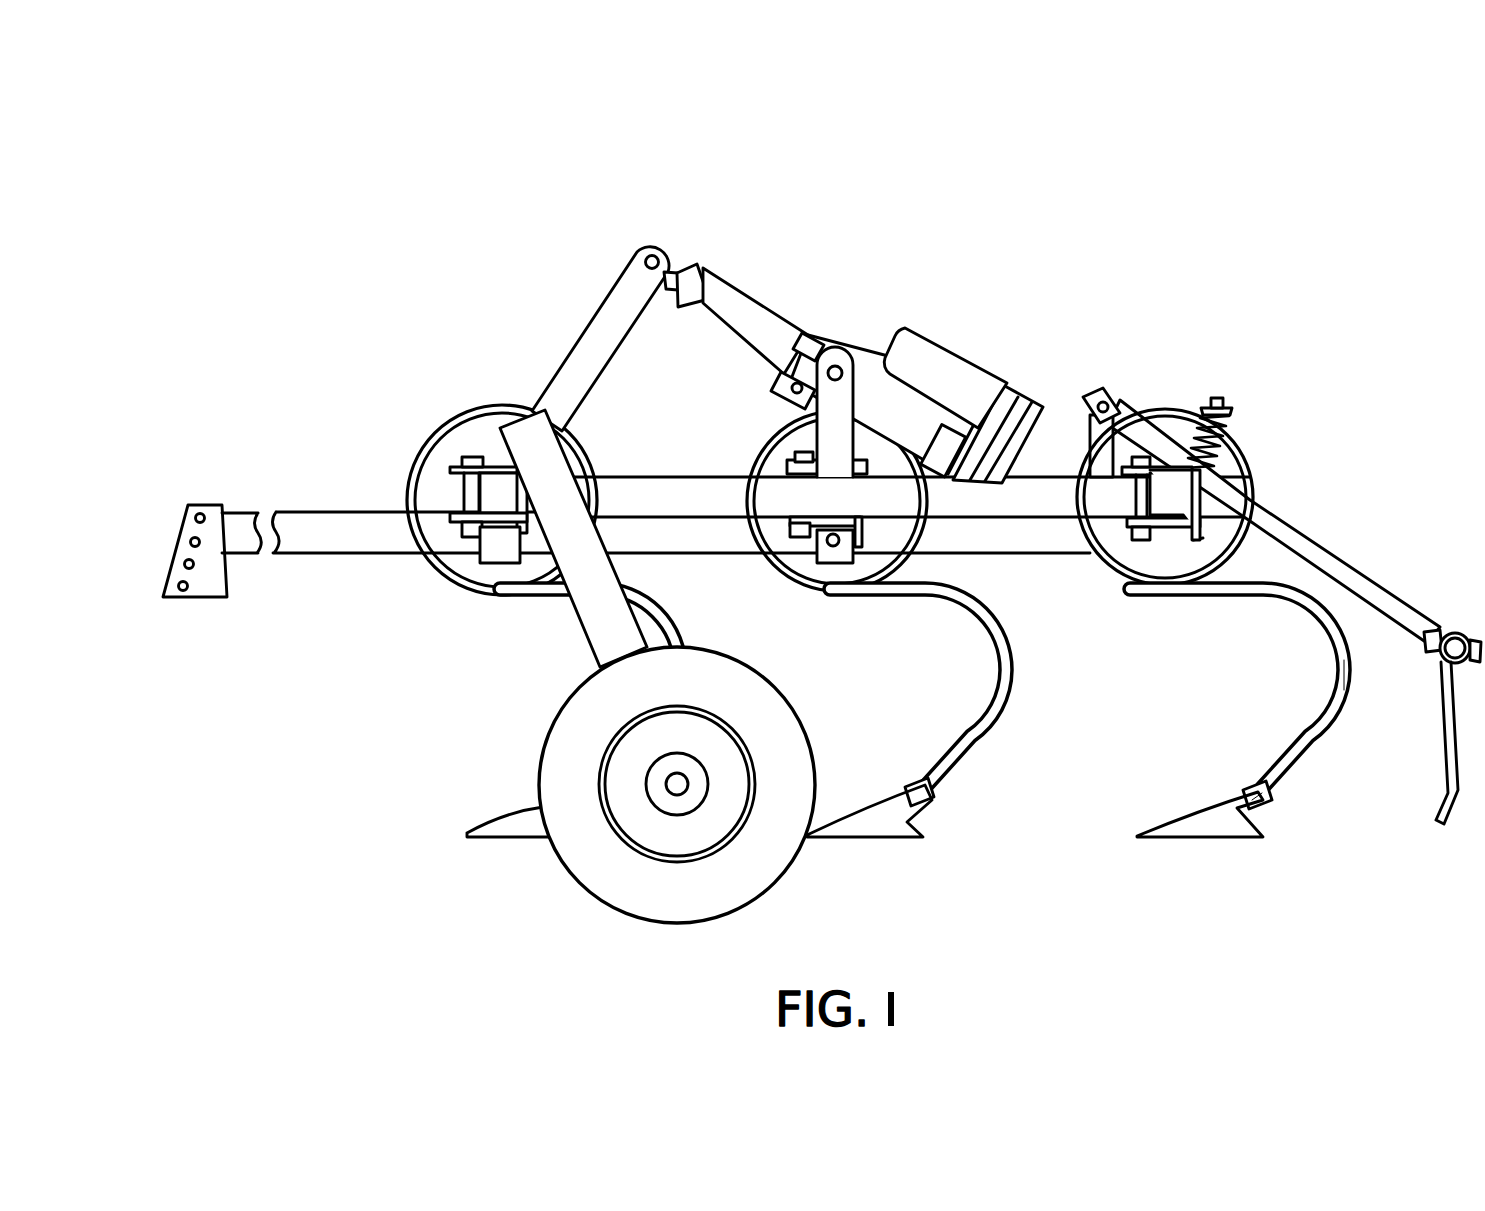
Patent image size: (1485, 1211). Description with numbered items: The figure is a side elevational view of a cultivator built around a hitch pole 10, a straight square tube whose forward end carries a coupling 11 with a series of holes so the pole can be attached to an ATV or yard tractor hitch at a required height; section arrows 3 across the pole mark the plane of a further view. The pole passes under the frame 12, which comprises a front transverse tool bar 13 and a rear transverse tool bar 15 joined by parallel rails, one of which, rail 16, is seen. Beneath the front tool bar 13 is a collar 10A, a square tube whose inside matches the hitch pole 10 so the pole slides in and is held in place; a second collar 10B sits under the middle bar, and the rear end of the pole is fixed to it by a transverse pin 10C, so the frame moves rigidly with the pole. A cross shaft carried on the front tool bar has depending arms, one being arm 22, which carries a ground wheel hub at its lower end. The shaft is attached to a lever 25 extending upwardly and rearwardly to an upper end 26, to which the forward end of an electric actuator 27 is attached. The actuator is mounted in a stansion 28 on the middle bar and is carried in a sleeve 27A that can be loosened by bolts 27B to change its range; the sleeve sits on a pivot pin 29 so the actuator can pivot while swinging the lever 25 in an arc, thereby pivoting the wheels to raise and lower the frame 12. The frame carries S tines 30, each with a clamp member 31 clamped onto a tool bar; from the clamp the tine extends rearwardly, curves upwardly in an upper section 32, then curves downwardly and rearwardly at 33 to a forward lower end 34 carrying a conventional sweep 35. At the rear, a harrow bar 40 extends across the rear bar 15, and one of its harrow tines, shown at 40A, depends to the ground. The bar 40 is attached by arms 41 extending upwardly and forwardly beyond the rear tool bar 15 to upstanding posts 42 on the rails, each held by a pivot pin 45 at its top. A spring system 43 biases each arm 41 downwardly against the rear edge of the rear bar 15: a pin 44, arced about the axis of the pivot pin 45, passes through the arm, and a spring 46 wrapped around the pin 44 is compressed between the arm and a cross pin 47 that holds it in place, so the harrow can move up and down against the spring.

The section line 3- 3 is at (316, 494).
The hitch pole 10 is at (285, 500).
The collar 10A is at (500, 555).
The second collar 10B is at (837, 535).
The transverse pin 10C is at (860, 545).
The coupling 11 is at (206, 600).
The frame 12 is at (664, 478).
The front transverse tool bar 13 is at (497, 497).
The rear transverse tool bar 15 is at (1170, 505).
The rail 16 is at (905, 495).
The depending arm 22 is at (604, 616).
The lever 25 is at (601, 318).
The upper end of lever 26 is at (658, 250).
The electric actuator 27 is at (758, 298).
The sleeve 27A is at (805, 350).
The bolts 27B is at (787, 390).
The stansion 28 is at (830, 433).
The pivot pin 29 is at (840, 370).
The S tine 30 is at (445, 581).
The clamp member 31 is at (1200, 543).
The upper section 32 is at (1085, 528).
The downwardly and rearwardly curving portion 33 is at (1330, 655).
The forward lower end 34 is at (1261, 788).
The sweep 35 is at (500, 820).
The harrow bar 40 is at (1461, 632).
The tine 40A is at (1433, 755).
The arm 41 is at (1328, 535).
The upstanding post 42 is at (1052, 432).
The spring system 43 is at (1242, 414).
The pin 44 is at (1218, 397).
The pivot pin 45 is at (1105, 402).
The spring 46 is at (1240, 448).
The cross pin 47 is at (1233, 411).